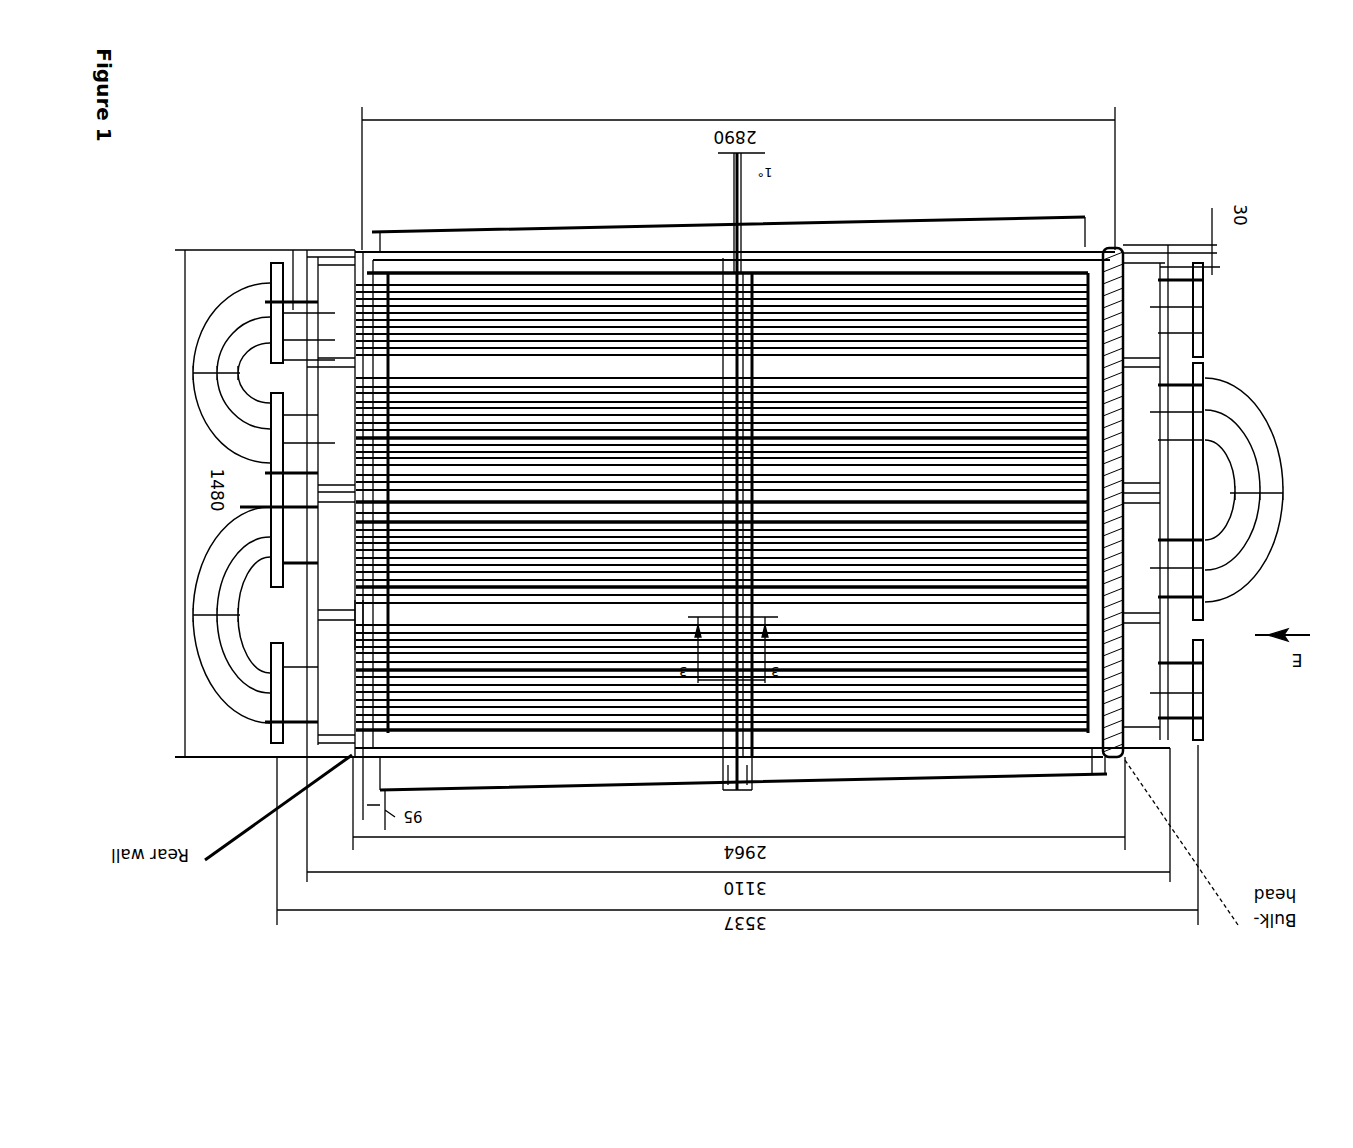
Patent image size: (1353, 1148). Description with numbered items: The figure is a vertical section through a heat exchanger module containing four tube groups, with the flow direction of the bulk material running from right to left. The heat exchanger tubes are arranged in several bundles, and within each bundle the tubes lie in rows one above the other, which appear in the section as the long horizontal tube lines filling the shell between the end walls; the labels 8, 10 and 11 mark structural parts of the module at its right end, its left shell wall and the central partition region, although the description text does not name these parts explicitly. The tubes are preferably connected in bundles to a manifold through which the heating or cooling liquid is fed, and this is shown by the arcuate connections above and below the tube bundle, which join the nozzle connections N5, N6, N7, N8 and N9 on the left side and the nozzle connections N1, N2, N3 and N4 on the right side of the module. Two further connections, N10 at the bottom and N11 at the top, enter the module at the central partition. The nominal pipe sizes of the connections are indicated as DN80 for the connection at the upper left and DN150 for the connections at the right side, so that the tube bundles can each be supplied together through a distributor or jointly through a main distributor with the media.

The bulkhead tube sheet 8 is at (1105, 252).
The shell wall 10 is at (367, 623).
The center partition plate 11 is at (722, 762).
The nozzle N1 is at (1197, 690).
The nozzle N2 is at (1231, 568).
The nozzle N3 is at (1231, 491).
The nozzle N4 is at (1210, 310).
The nozzle N5 is at (224, 693).
The nozzle N6 is at (224, 615).
The nozzle N7 is at (233, 490).
The nozzle N8 is at (233, 373).
The nozzle N9 is at (233, 311).
The nozzle N10 is at (746, 787).
The nozzle N11 is at (721, 471).
The DN80 flange DN80 is at (293, 250).
The DN150 flange DN150 is at (1197, 740).